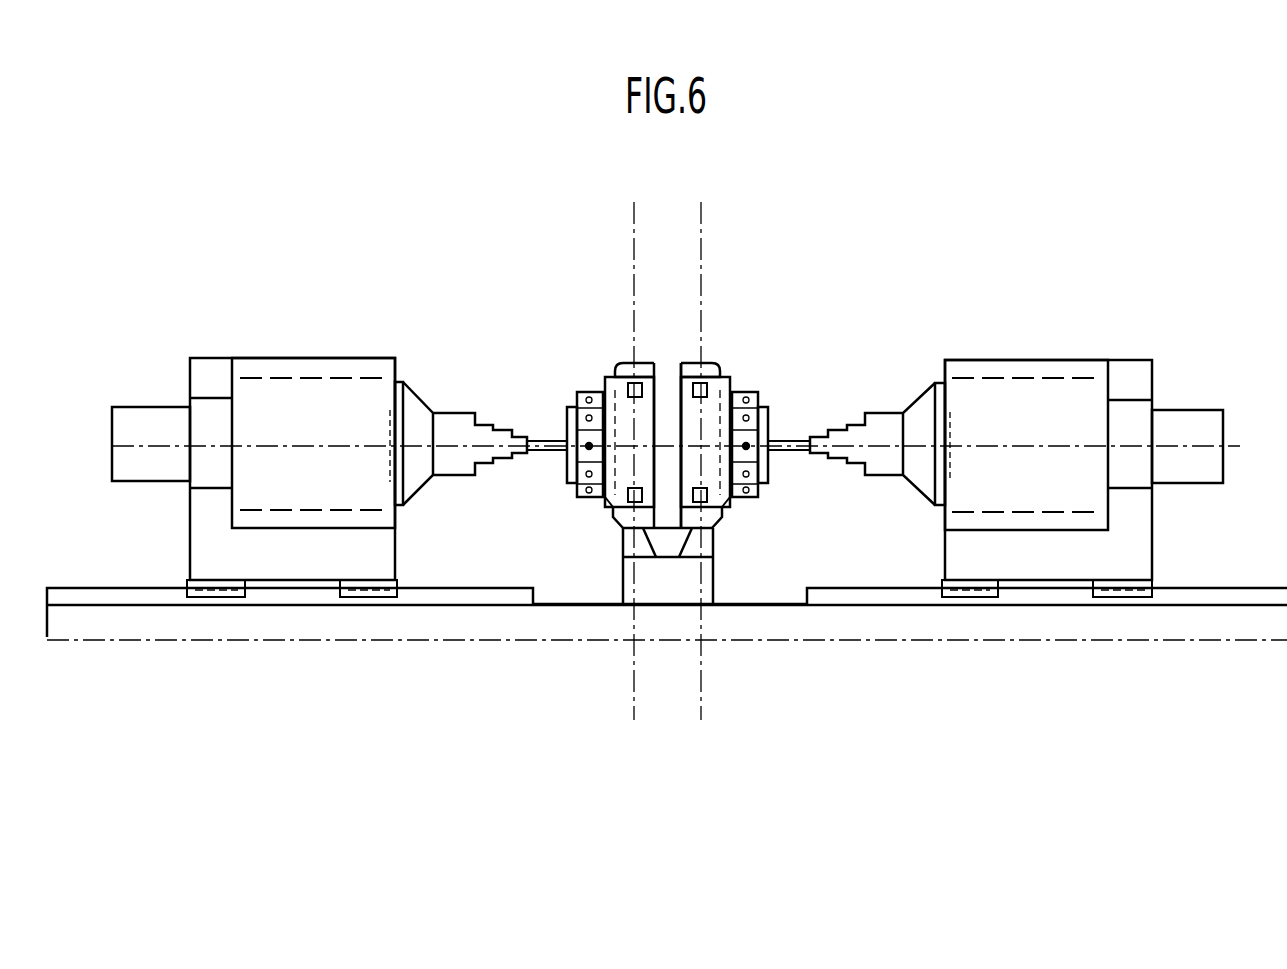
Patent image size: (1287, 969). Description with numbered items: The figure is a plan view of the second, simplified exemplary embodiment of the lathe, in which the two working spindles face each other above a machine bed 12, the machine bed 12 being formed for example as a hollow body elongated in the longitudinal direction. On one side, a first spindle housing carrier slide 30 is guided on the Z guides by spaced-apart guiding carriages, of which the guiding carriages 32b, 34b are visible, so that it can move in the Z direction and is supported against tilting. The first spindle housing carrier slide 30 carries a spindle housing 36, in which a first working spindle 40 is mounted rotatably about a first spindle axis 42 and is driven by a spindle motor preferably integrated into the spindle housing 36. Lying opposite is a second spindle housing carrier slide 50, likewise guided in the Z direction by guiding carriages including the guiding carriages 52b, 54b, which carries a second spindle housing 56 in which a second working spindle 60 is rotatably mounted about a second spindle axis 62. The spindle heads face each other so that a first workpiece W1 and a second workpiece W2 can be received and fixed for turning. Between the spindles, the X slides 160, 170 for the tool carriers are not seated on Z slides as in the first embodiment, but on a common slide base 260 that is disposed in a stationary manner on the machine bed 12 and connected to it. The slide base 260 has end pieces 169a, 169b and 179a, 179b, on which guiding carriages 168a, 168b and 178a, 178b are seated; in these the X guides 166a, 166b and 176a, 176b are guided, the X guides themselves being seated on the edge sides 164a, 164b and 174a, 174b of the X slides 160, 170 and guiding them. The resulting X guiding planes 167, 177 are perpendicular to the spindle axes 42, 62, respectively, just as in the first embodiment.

The machine bed 12 is at (866, 612).
The first spindle housing carrier slide 30 is at (1035, 550).
The guiding carriage 32b is at (963, 599).
The guiding carriage 34b is at (1118, 599).
The spindle housing 36 is at (1042, 400).
The first working spindle 40 is at (880, 410).
The first spindle axis 42 is at (1192, 446).
The second spindle housing carrier slide 50 is at (274, 560).
The guiding carriage 52b is at (358, 599).
The guiding carriage 54b is at (221, 599).
The second spindle housing 56 is at (268, 422).
The second working spindle 60 is at (452, 404).
The second spindle axis 62 is at (158, 446).
The X slide 160 is at (716, 405).
The edge side 164a is at (745, 392).
The edge side 164b is at (726, 498).
The X guide 166a is at (700, 382).
The X guide 166b is at (701, 573).
The X guiding plane 167 is at (701, 720).
The guiding carriage 168a is at (725, 377).
The guiding carriage 168b is at (720, 512).
The end piece 169a is at (708, 365).
The end piece 169b is at (720, 522).
The X slide 170 is at (619, 406).
The edge side 174a is at (588, 392).
The edge side 174b is at (613, 497).
The X guide 176a is at (648, 380).
The X guide 176b is at (627, 503).
The X guiding plane 177 is at (634, 720).
The guiding carriage 178a is at (610, 376).
The guiding carriage 178b is at (613, 520).
The end piece 179a is at (627, 365).
The end piece 179b is at (636, 557).
The slide base 260 is at (672, 573).
The first workpiece W1 is at (788, 443).
The second workpiece W2 is at (545, 440).